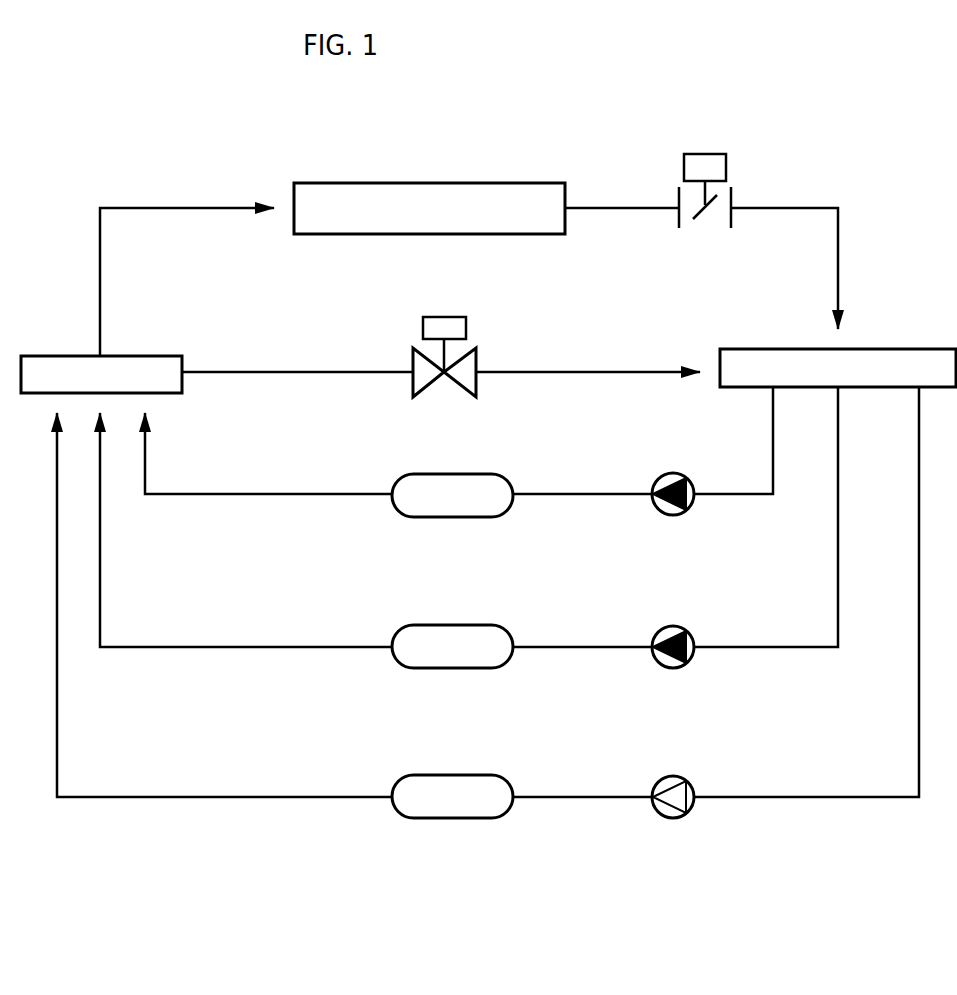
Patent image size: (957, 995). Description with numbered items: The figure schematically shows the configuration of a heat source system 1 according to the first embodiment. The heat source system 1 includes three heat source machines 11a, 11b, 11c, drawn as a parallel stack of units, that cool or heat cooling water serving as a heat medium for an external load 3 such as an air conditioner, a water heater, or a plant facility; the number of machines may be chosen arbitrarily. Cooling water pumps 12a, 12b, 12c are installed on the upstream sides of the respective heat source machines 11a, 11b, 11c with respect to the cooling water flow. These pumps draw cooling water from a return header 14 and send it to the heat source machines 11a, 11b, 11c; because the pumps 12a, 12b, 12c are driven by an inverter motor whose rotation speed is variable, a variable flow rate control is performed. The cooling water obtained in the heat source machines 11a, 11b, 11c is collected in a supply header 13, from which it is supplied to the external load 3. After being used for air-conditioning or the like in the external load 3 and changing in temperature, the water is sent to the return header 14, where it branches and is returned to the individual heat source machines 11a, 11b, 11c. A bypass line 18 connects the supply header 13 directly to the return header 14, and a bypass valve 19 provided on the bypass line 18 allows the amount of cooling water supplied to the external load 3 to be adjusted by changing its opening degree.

The heat source system 1 is at (66, 229).
The external load 3 is at (510, 183).
The heat source machine 11a is at (400, 475).
The heat source machine 11b is at (400, 626).
The heat source machine 11c is at (400, 776).
The cooling water pump 12a is at (688, 508).
The cooling water pump 12b is at (688, 661).
The cooling water pump 12c is at (688, 811).
The supply header 13 is at (70, 356).
The return header 14 is at (882, 349).
The bypass line 18 is at (645, 371).
The bypass valve 19 is at (412, 362).